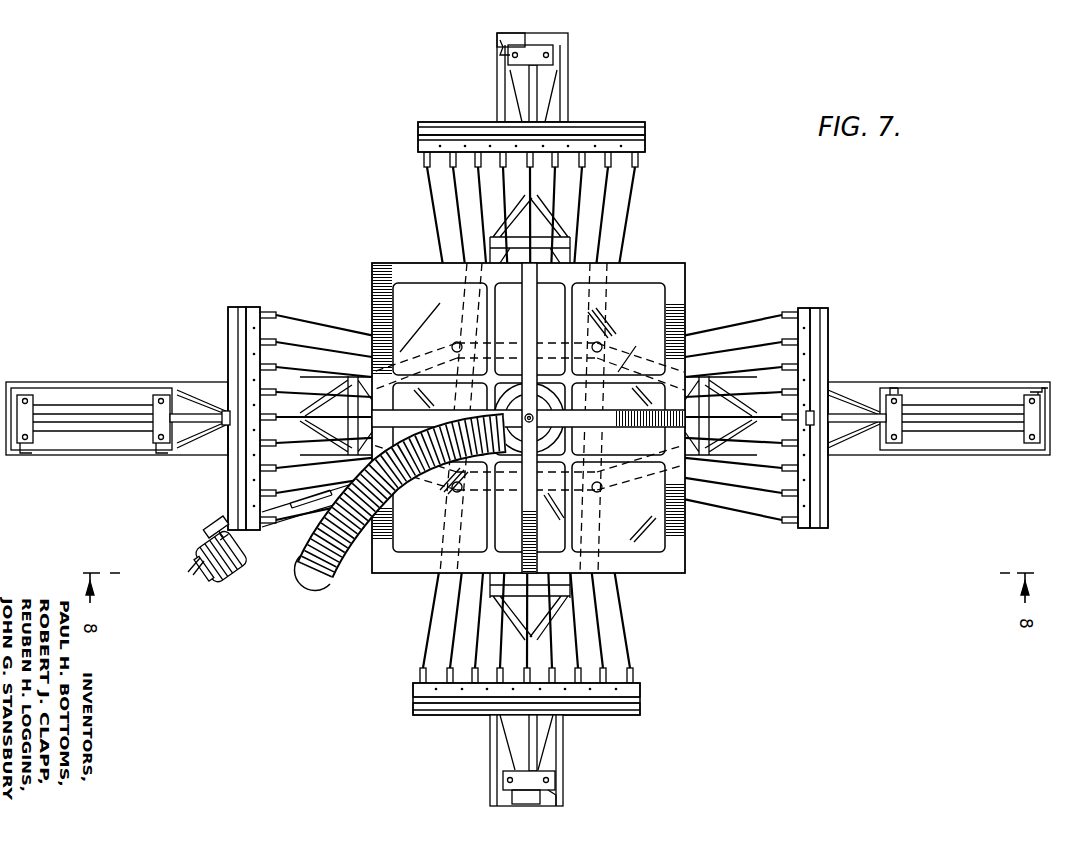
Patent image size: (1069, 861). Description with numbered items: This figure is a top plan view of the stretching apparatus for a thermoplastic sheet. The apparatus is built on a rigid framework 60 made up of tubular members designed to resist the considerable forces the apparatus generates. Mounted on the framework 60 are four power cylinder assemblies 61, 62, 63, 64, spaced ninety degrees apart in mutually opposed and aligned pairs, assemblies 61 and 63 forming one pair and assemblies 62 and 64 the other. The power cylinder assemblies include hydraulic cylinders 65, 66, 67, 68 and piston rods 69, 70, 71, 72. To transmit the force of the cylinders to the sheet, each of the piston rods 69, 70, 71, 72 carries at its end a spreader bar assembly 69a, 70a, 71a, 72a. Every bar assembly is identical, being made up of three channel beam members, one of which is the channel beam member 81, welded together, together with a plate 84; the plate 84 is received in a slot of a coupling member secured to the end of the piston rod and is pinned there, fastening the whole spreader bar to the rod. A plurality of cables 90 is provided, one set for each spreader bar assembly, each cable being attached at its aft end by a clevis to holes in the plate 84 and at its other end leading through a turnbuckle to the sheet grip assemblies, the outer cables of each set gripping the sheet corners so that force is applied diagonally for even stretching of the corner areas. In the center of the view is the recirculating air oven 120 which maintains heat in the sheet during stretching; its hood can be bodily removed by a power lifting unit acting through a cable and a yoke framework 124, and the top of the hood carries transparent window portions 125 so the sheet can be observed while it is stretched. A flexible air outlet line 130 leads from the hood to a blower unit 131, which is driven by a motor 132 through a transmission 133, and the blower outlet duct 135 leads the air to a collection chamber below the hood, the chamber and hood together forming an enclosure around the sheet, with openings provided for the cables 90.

The rigid framework 60 is at (849, 381).
The power cylinder assembly 61 is at (96, 397).
The power cylinder assembly 62 is at (558, 42).
The power cylinder assembly 63 is at (976, 403).
The power cylinder assembly 64 is at (549, 797).
The hydraulic cylinder 65 is at (47, 402).
The hydraulic cylinder 66 is at (525, 40).
The hydraulic cylinder 67 is at (930, 412).
The hydraulic cylinder 68 is at (520, 797).
The piston rod 69 is at (191, 412).
The spreader bar assembly 69a is at (239, 304).
The piston rod 70 is at (536, 93).
The spreader bar assembly 70a is at (650, 129).
The piston rod 71 is at (866, 425).
The spreader bar assembly 71a is at (812, 305).
The piston rod 72 is at (532, 747).
The spreader bar assembly 72a is at (645, 712).
The channel beam member 81 is at (622, 123).
The plate 84 is at (647, 149).
The cables 90 is at (632, 185).
The recirculating air oven 120 is at (560, 420).
The yoke framework 124 is at (532, 320).
The transparent window portions 125 is at (406, 290).
The flexible air outlet line 130 is at (308, 570).
The blower unit 131 is at (283, 526).
The motor 132 is at (234, 579).
The transmission 133 is at (226, 522).
The blower outlet duct 135 is at (440, 507).